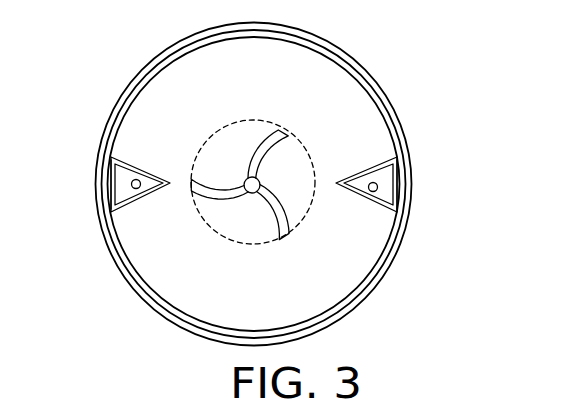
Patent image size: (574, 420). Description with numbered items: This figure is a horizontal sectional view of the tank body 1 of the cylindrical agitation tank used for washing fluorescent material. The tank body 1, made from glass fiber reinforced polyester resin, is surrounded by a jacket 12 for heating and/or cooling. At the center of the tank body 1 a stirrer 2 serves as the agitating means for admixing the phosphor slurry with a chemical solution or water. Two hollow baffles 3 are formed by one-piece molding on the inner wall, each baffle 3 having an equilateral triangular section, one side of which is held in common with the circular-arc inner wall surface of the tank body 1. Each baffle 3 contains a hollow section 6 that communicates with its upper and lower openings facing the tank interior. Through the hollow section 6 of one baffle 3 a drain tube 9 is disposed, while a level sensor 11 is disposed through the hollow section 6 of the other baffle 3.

The tank body 1 is at (371, 83).
The jacket 12 is at (348, 48).
The stirrer 2 is at (253, 182).
The baffle 3 is at (149, 204).
The hollow section 6 is at (115, 198).
The drain tube 9 is at (135, 180).
The level sensor 11 is at (378, 183).